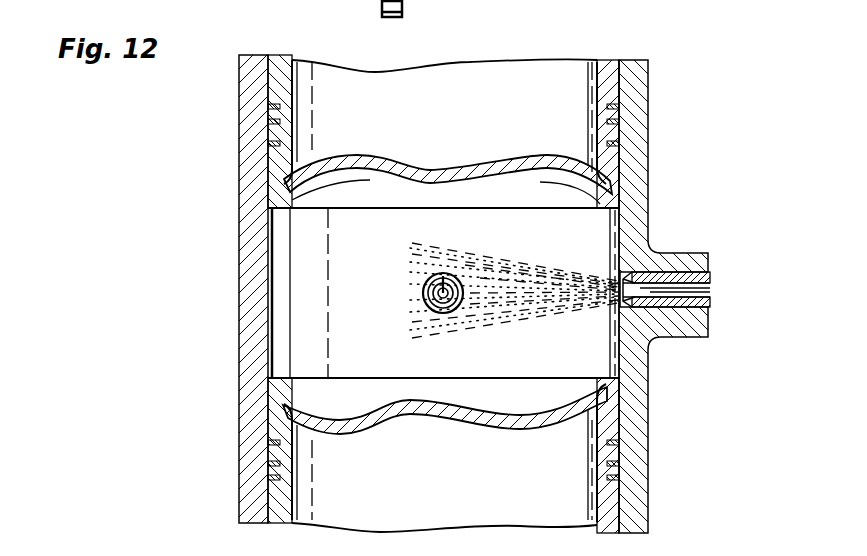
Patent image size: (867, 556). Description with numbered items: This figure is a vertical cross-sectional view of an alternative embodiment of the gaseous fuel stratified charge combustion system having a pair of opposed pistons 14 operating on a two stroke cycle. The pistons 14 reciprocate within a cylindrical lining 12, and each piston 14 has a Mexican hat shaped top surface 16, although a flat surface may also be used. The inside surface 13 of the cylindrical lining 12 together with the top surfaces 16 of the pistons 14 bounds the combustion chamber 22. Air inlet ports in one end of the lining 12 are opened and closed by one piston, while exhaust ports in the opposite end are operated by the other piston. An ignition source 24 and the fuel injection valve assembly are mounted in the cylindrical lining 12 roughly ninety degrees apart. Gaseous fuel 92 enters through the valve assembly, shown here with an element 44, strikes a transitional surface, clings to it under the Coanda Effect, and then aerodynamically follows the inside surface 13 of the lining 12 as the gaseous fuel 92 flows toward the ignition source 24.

The cylindrical lining 12 is at (248, 128).
The inside surface 13 is at (195, 262).
The piston 14 is at (450, 119).
The top surface 16 is at (540, 170).
The combustion chamber 22 is at (363, 283).
The ignition source 24 is at (437, 295).
The nozzle tube 44 is at (655, 320).
The gaseous fuel 92 is at (587, 328).